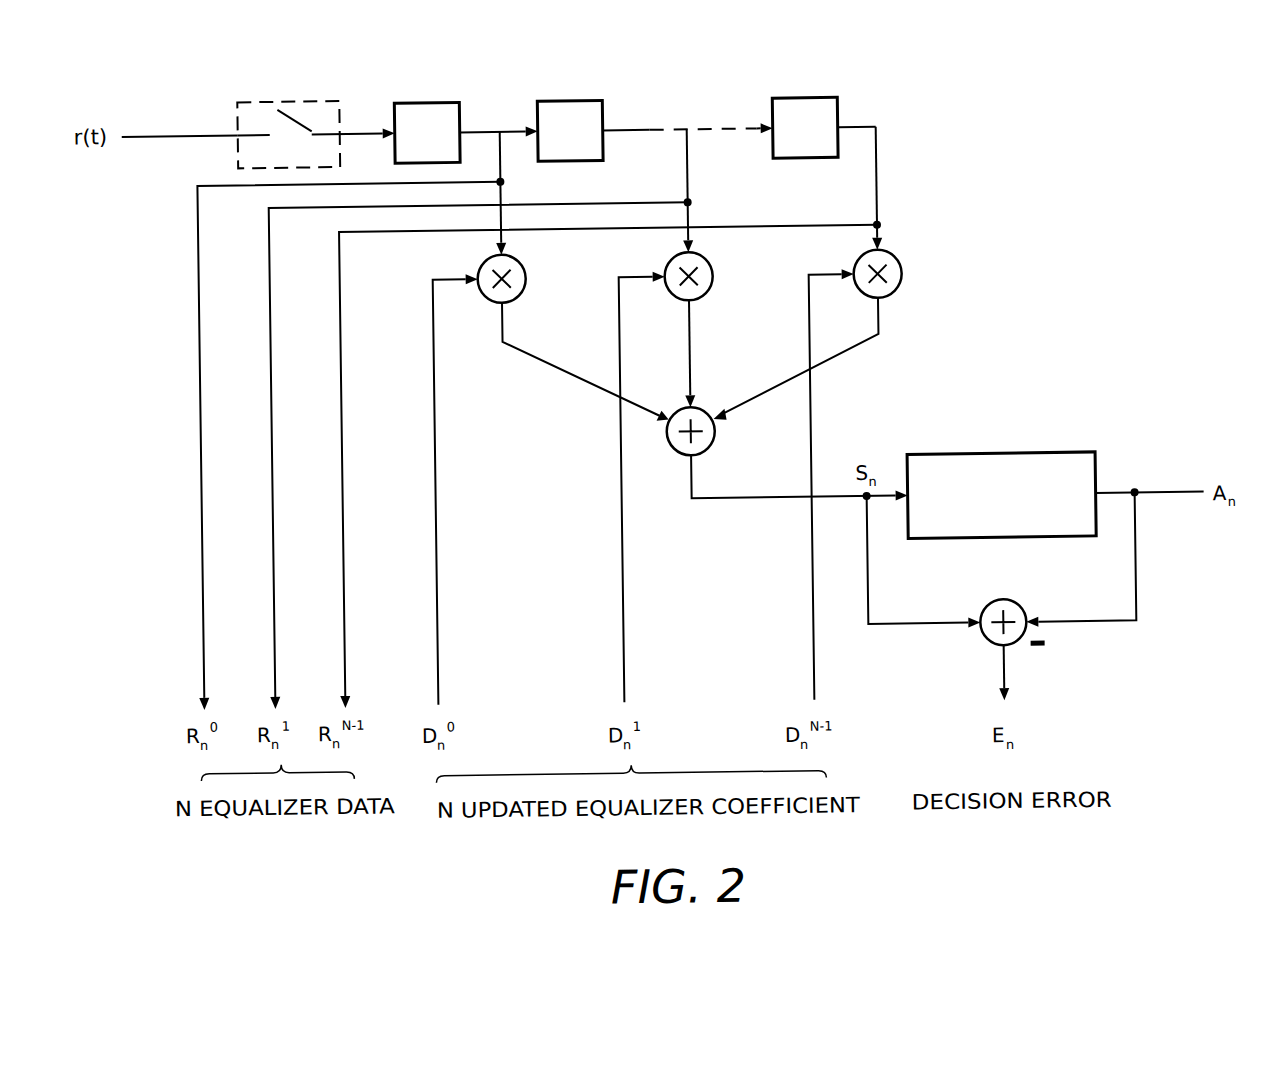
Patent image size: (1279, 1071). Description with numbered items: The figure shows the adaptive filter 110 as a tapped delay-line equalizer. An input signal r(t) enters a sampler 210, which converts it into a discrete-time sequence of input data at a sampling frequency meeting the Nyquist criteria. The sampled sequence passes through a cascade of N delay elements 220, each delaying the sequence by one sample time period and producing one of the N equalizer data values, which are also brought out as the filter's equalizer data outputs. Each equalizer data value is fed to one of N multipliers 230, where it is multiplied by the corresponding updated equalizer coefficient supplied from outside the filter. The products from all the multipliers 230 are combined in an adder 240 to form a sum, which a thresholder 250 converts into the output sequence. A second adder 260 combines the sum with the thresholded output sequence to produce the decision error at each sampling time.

The adaptive filter 110 is at (1135, 93).
The sampler 210 is at (327, 102).
The delay elements 220 is at (827, 105).
The multipliers 230 is at (528, 277).
The adder 240 is at (715, 438).
The thresholder 250 is at (1075, 468).
The adder 260 is at (1000, 607).